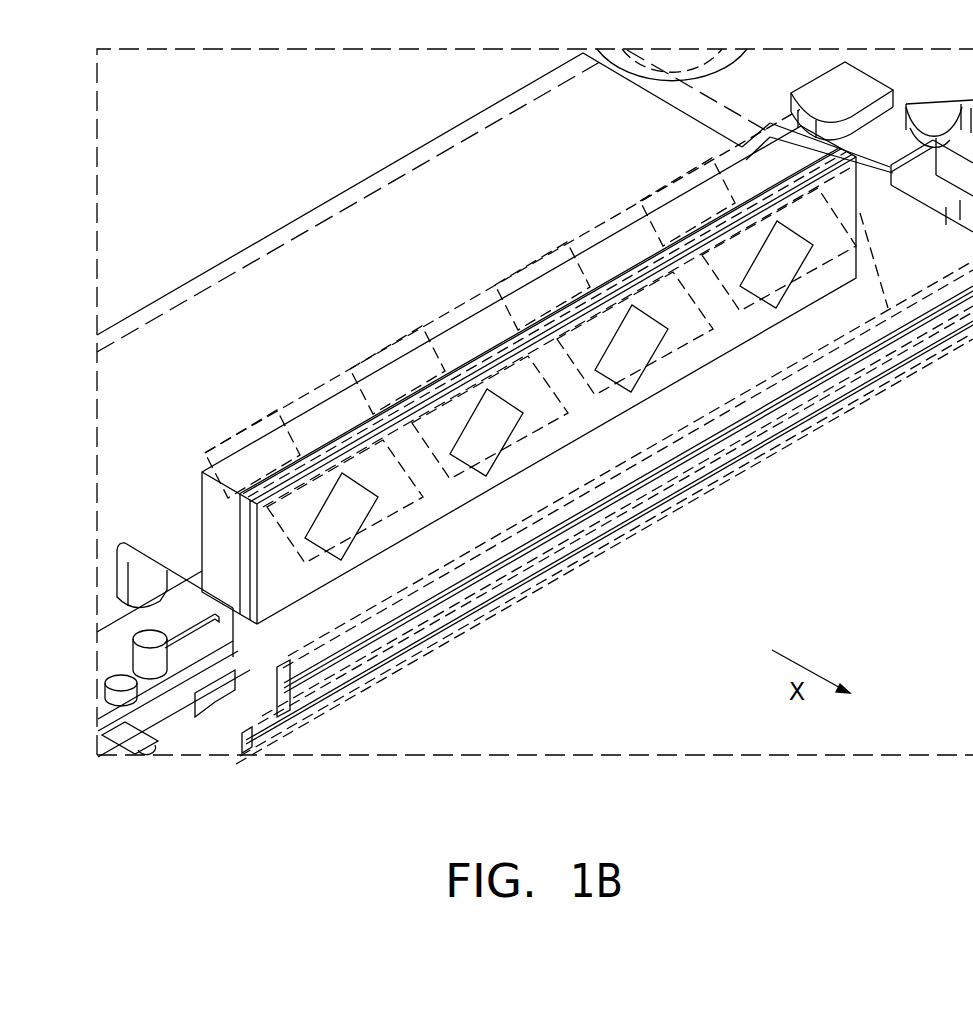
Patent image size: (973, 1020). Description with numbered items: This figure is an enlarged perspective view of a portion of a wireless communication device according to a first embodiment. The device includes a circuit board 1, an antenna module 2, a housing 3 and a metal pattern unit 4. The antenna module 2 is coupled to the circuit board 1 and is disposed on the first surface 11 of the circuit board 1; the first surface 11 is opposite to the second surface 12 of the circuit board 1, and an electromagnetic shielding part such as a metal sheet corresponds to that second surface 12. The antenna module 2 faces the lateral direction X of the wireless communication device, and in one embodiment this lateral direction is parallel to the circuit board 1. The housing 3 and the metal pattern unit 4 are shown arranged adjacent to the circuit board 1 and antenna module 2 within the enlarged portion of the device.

The circuit board 1 is at (604, 544).
The first surface 11 is at (272, 640).
The second surface 12 is at (307, 675).
The antenna module 2 is at (342, 560).
The housing 3 is at (887, 180).
The metal pattern unit 4 is at (585, 405).